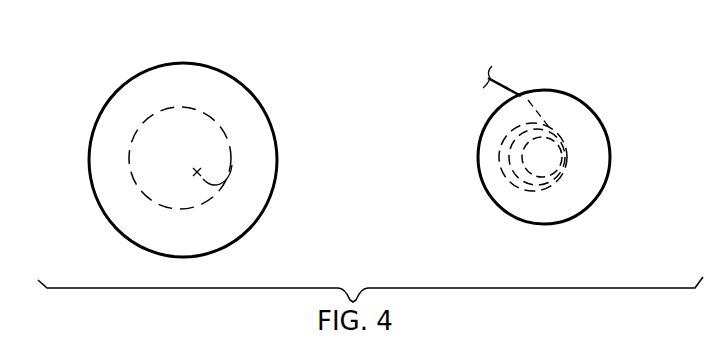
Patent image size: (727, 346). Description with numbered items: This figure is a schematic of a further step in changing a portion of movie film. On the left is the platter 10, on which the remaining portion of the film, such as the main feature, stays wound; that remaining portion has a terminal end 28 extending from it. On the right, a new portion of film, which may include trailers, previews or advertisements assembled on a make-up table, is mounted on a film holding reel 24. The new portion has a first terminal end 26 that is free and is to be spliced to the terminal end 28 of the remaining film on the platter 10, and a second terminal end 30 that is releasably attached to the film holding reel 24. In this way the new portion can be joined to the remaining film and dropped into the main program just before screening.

The platter 10 is at (145, 71).
The terminal end 28 is at (197, 172).
The film holding reel 24 is at (603, 120).
The first terminal end 26 is at (484, 74).
The second terminal end 30 is at (545, 131).